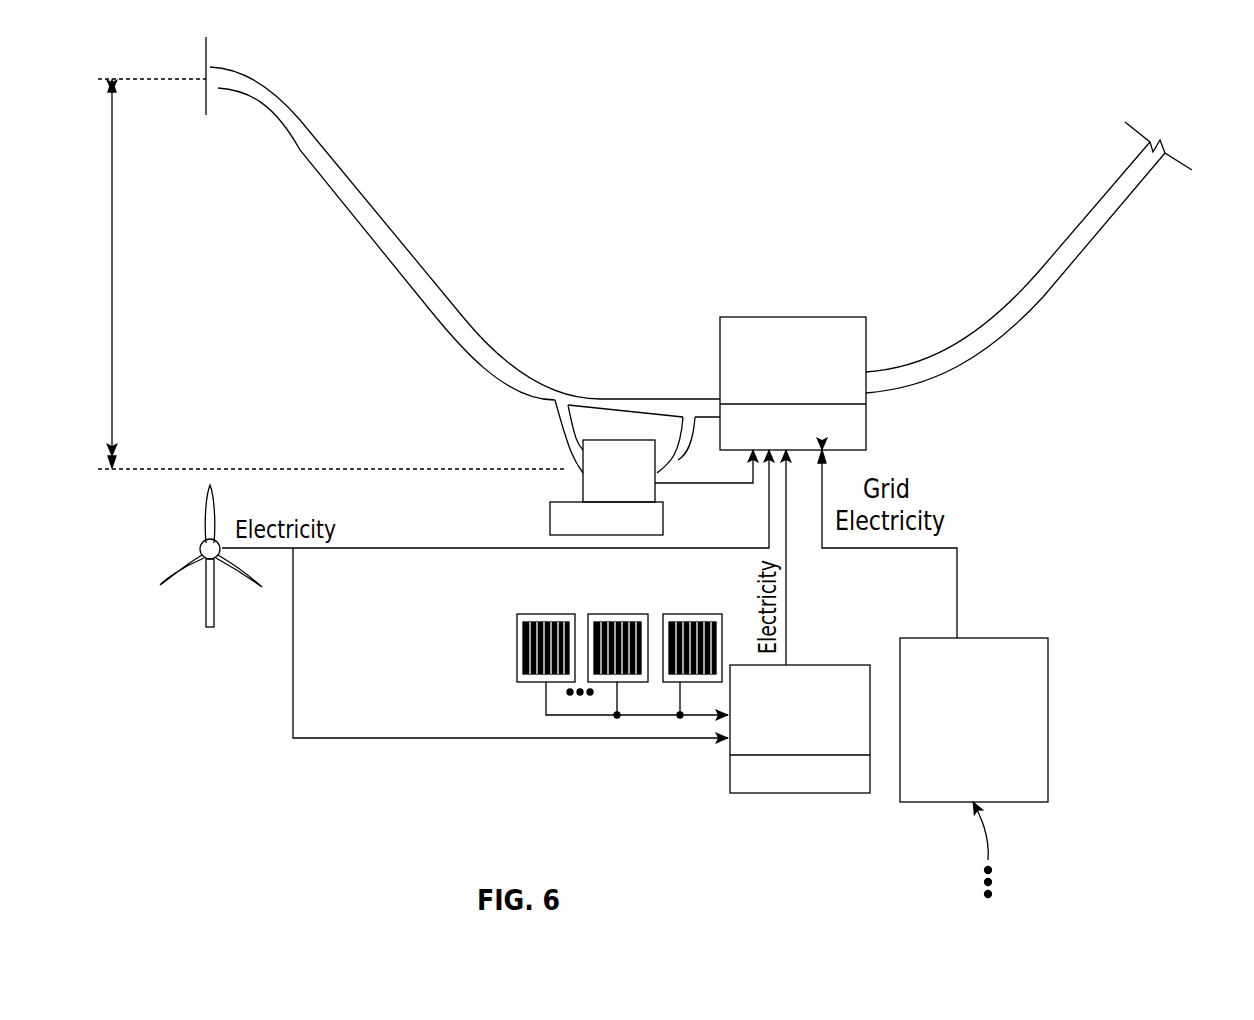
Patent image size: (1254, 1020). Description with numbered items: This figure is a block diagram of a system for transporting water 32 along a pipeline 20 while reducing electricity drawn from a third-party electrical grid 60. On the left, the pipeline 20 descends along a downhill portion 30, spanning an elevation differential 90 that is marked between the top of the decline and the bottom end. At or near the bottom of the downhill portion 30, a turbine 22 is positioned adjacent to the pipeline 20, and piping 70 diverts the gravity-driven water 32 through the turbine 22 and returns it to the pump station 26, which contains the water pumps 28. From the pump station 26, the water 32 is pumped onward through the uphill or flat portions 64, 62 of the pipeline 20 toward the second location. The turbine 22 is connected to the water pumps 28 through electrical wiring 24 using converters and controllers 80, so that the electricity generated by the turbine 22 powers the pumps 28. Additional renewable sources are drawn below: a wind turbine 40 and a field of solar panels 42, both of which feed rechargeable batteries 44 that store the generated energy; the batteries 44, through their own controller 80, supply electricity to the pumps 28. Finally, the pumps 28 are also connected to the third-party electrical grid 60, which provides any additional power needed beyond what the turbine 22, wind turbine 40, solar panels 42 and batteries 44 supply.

The pipeline 20 is at (713, 268).
The micro hydroelectric turbine 22 is at (619, 471).
The electrical wiring 24 is at (722, 489).
The pump station 26 is at (793, 340).
The water pump 28 is at (788, 317).
The downhill portion 30 is at (685, 372).
The water 32 is at (697, 305).
The wind turbine 40 is at (185, 613).
The solar panels 42 is at (498, 650).
The rechargeable batteries 44 is at (820, 665).
The third-party electrical grid 60 is at (1040, 682).
The flat portion 62 is at (1047, 300).
The uphill portion 64 is at (1047, 310).
The piping 70 is at (567, 427).
The controller 80 is at (863, 437).
The elevation differential 90 is at (332, 274).